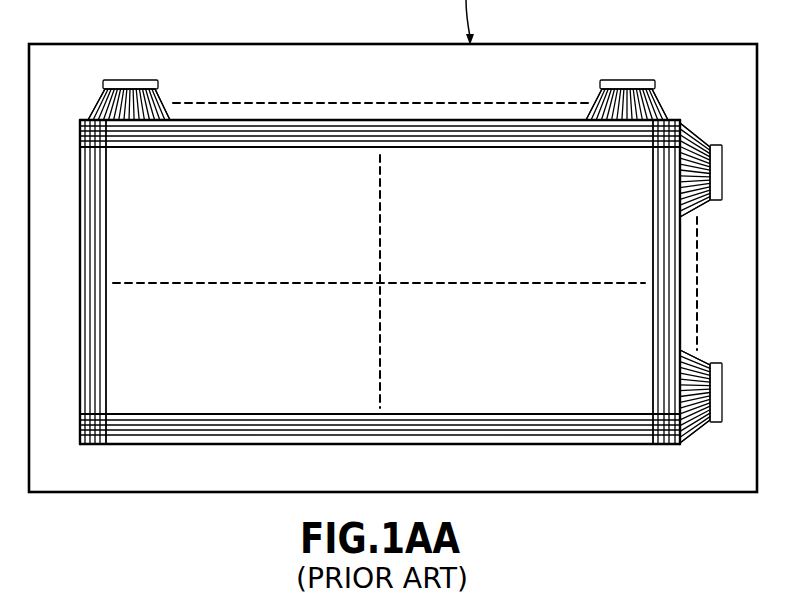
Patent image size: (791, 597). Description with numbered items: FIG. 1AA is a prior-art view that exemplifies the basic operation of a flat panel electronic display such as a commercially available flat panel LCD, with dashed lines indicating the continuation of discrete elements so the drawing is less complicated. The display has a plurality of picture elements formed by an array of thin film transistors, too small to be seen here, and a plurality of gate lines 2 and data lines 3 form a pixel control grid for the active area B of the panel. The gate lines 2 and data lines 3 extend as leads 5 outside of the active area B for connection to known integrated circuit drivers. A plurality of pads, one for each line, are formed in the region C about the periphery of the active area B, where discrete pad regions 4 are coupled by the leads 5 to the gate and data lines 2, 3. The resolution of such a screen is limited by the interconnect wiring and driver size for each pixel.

The peripheral pad region C is at (310, 62).
The gate lines 2 is at (463, 116).
The data lines 3 is at (690, 296).
The discrete pad regions 4 is at (631, 80).
The leads 5 is at (160, 101).
The active area B is at (517, 232).